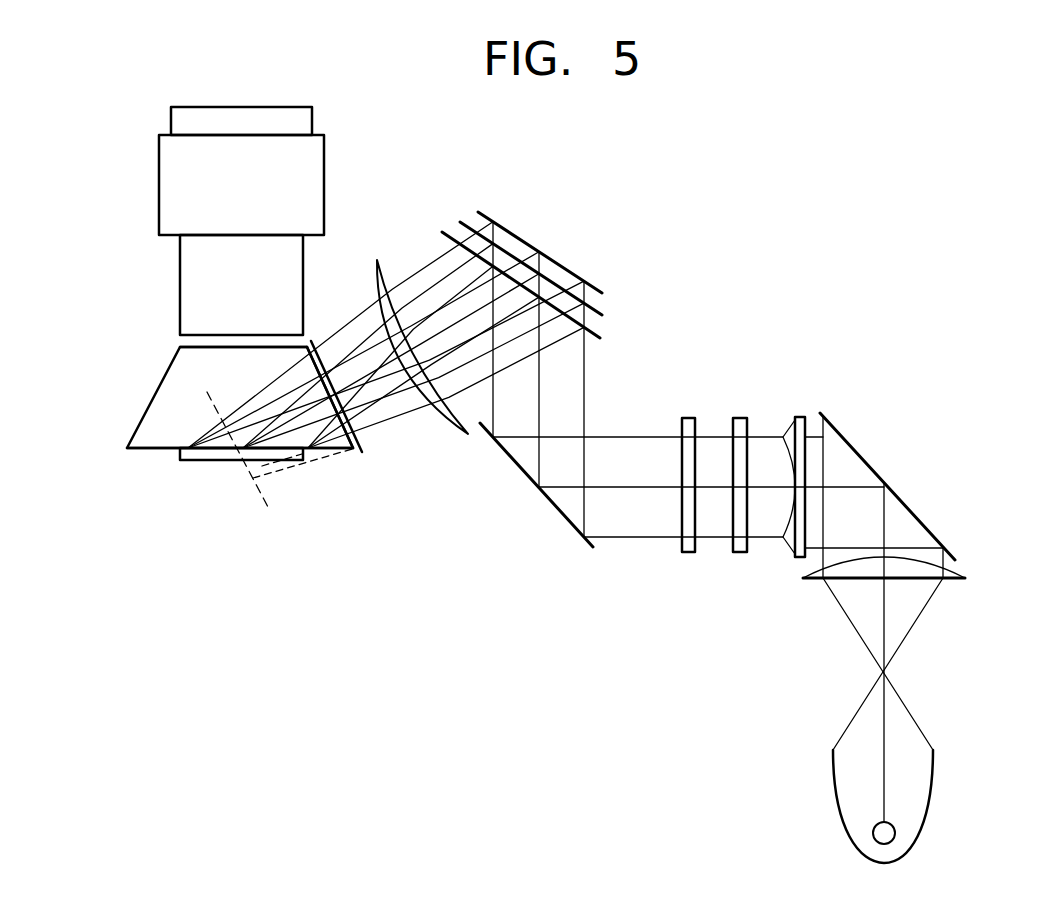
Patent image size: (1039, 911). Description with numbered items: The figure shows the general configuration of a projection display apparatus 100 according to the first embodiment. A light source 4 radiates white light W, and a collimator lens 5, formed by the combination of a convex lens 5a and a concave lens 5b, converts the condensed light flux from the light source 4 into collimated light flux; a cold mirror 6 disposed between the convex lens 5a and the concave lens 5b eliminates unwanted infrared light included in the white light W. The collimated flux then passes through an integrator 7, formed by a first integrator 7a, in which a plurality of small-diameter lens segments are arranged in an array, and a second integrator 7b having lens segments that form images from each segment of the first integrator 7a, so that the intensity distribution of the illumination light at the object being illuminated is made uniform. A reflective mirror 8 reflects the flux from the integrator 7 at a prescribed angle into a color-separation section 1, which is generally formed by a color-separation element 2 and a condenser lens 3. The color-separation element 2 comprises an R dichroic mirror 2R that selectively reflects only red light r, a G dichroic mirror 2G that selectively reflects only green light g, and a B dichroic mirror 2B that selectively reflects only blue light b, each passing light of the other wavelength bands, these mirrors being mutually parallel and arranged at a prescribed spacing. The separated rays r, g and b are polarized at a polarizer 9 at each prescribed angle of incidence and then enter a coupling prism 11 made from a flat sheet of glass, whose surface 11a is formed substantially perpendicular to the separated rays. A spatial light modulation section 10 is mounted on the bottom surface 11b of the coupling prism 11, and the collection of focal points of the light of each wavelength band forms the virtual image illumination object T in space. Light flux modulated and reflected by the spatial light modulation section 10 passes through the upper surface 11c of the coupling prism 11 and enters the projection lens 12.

The projection display apparatus 100 is at (720, 206).
The color-separation section 1 is at (470, 186).
The color-separation element 2 is at (540, 222).
The B dichroic mirror 2B is at (581, 274).
The G dichroic mirror 2G is at (603, 313).
The R dichroic mirror 2R is at (600, 340).
The condenser lens 3 is at (377, 265).
The light source 4 is at (933, 775).
The collimator lens 5 is at (884, 485).
The convex lens 5a is at (956, 573).
The concave lens 5b is at (800, 428).
The cold mirror 6 is at (916, 521).
The integrator 7 is at (725, 434).
The first integrator 7a is at (744, 418).
The second integrator 7b is at (689, 418).
The reflective mirror 8 is at (558, 511).
The polarizer 9 is at (364, 449).
The spatial light modulation section 10 is at (208, 462).
The coupling prism 11 is at (167, 397).
The surface 11a is at (358, 452).
The bottom surface 11b is at (147, 447).
The upper surface 11c is at (190, 352).
The projection lens 12 is at (159, 173).
The white light W is at (639, 488).
The virtual image illumination object T is at (262, 494).
The red light r is at (437, 357).
The green light g is at (457, 328).
The blue light b is at (467, 300).